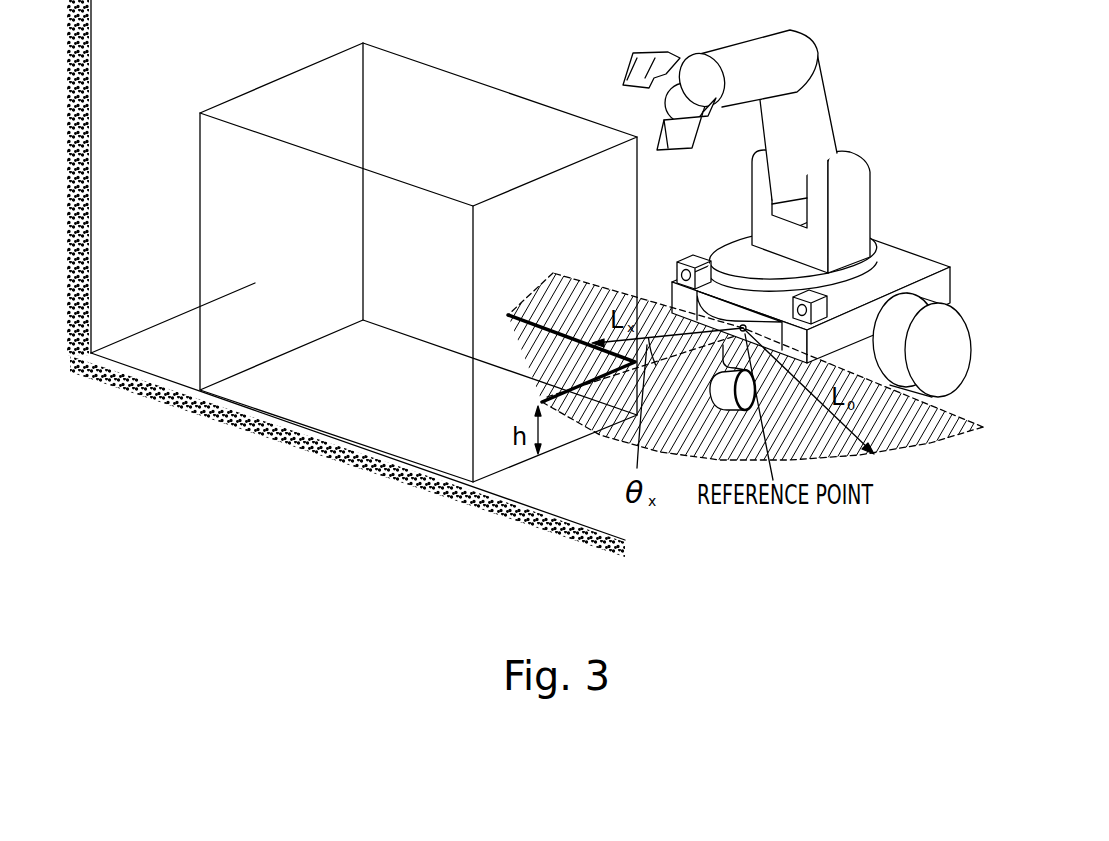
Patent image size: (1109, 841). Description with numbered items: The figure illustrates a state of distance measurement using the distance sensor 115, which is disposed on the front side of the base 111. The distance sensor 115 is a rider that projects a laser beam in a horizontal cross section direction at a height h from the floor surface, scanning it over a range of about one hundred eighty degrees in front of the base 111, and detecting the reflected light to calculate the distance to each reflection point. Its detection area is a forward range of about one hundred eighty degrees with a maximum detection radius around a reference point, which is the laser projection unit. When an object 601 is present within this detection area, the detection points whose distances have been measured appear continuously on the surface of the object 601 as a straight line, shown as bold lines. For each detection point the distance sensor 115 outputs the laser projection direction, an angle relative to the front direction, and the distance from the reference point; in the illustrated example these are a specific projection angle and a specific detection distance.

The object 601 is at (318, 108).
The base 111 is at (915, 270).
The distance sensor 115 is at (735, 316).